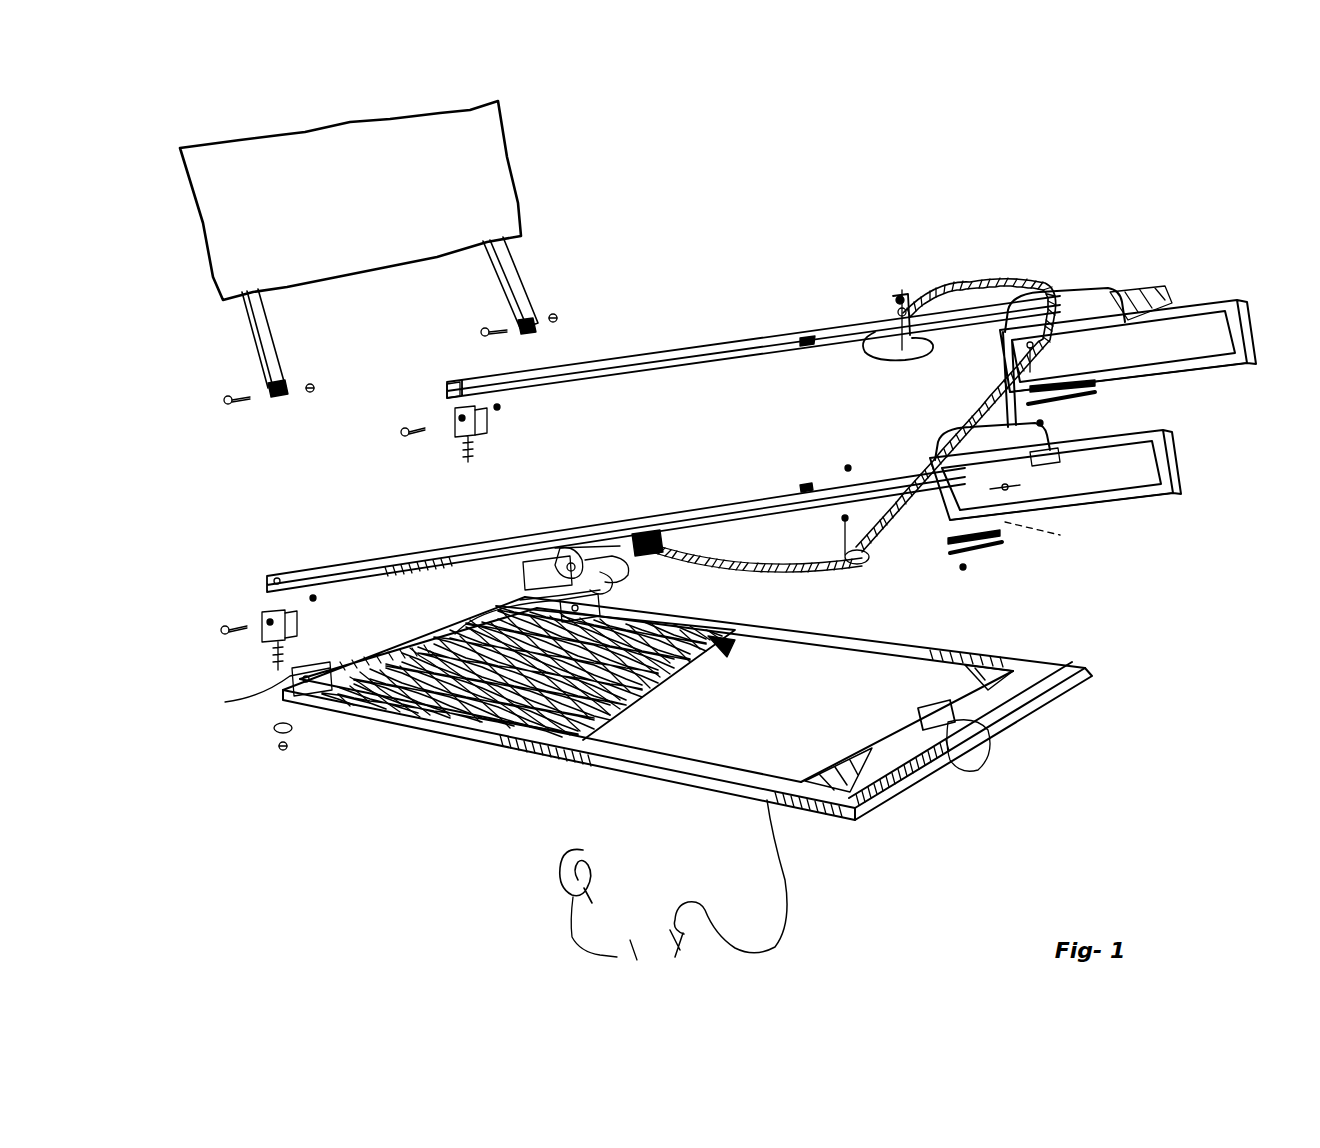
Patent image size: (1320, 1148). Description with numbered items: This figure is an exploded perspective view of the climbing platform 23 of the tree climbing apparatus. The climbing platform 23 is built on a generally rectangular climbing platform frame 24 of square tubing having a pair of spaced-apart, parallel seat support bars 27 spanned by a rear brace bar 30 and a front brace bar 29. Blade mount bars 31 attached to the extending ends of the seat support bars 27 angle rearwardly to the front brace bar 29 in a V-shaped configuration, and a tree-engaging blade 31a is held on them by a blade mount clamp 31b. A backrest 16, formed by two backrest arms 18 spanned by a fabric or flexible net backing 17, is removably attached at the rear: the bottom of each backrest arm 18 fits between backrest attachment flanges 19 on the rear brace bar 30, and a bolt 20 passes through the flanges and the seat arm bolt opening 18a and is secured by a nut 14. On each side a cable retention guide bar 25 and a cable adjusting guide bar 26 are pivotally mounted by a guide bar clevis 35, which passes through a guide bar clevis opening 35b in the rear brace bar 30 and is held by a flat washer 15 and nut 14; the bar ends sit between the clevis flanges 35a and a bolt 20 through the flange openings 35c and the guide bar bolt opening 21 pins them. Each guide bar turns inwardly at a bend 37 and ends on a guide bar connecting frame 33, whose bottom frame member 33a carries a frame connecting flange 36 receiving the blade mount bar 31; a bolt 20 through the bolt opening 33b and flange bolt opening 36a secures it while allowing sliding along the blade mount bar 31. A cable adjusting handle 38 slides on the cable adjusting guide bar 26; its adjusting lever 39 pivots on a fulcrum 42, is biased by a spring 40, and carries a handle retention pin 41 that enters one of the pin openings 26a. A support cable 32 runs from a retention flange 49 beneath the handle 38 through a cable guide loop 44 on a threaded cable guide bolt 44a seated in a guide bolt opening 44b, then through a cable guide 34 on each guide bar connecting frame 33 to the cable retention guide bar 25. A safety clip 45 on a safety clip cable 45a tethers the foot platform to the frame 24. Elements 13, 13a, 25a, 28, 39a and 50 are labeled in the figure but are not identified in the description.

The clip 13 is at (920, 352).
The clip fastener 13a is at (900, 296).
The nut 14 is at (558, 318).
The flat washer 15 is at (275, 730).
The backrest 16 is at (302, 122).
The net backing 17 is at (403, 140).
The backrest arms 18 is at (265, 330).
The seat arm bolt opening 18a is at (280, 400).
The backrest attachment flanges 19 is at (225, 703).
The bolt 20 is at (480, 328).
The guide bar bolt opening 21 is at (450, 385).
The climbing platform 23 is at (757, 226).
The climbing platform frame 24 is at (1058, 662).
The cable retention guide bar 25 is at (660, 350).
The bar stop 25a is at (810, 334).
The cable adjusting guide bar 26 is at (718, 468).
The pin openings 26a is at (405, 563).
The seat support bars 27 is at (855, 636).
The fabric 28 is at (700, 668).
The front brace bar 29 is at (975, 682).
The rear brace bar 30 is at (400, 650).
The blade mount bars 31 is at (1050, 700).
The tree-engaging blade 31a is at (985, 750).
The blade mount clamp 31b is at (918, 715).
The support cable 32 is at (985, 282).
The guide bar connecting frame 33 is at (1250, 302).
The bottom frame member 33a is at (1198, 362).
The bolt opening 33b is at (1040, 538).
The cable guide 34 is at (1095, 288).
The guide bar clevis 35 is at (471, 450).
The clevis flanges 35a is at (477, 420).
The guide bar clevis opening 35b is at (312, 700).
The flange openings 35c is at (455, 412).
The frame connecting flange 36 is at (1097, 384).
The flange bolt opening 36a is at (1050, 392).
The bend 37 is at (1160, 290).
The cable adjusting handle 38 is at (566, 524).
The adjusting lever 39 is at (522, 598).
The hook 39a is at (590, 556).
The spring 40 is at (595, 556).
The handle retention pin 41 is at (528, 566).
The fulcrum 42 is at (558, 556).
The cable guide loop 44 is at (850, 565).
The cable guide bolt 44a is at (840, 524).
The guide bolt opening 44b is at (806, 484).
The safety clip 45 is at (583, 850).
The safety clip cable 45a is at (787, 943).
The retention flange 49 is at (652, 532).
The bolt 50 is at (908, 305).